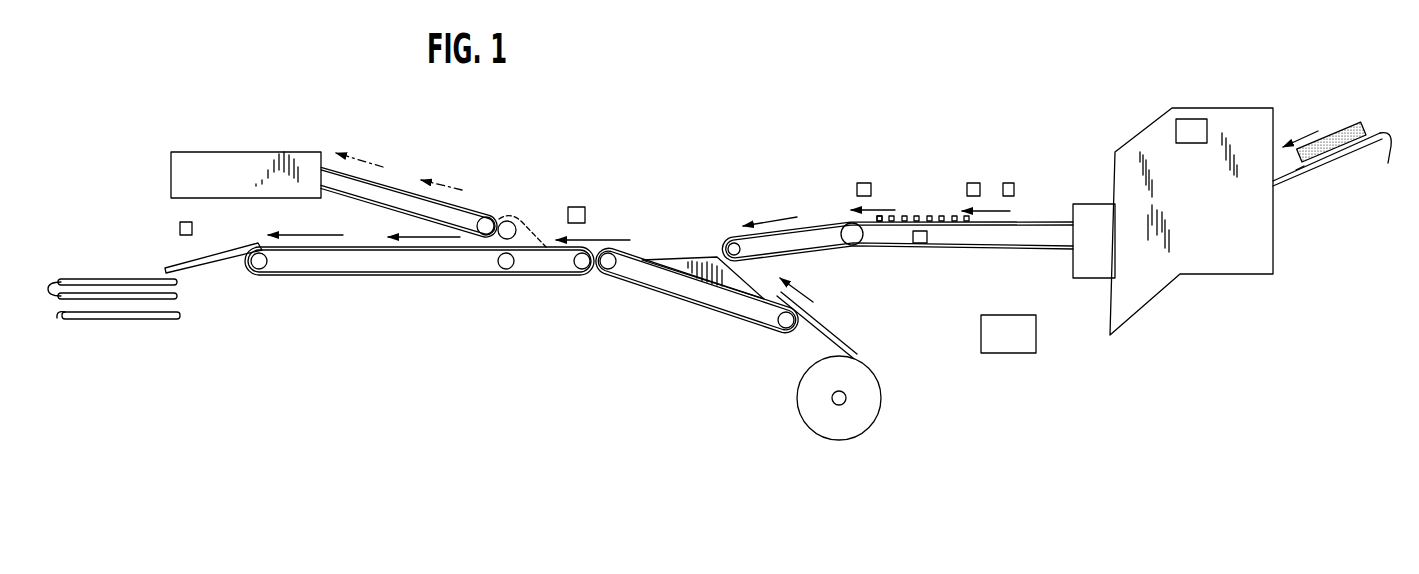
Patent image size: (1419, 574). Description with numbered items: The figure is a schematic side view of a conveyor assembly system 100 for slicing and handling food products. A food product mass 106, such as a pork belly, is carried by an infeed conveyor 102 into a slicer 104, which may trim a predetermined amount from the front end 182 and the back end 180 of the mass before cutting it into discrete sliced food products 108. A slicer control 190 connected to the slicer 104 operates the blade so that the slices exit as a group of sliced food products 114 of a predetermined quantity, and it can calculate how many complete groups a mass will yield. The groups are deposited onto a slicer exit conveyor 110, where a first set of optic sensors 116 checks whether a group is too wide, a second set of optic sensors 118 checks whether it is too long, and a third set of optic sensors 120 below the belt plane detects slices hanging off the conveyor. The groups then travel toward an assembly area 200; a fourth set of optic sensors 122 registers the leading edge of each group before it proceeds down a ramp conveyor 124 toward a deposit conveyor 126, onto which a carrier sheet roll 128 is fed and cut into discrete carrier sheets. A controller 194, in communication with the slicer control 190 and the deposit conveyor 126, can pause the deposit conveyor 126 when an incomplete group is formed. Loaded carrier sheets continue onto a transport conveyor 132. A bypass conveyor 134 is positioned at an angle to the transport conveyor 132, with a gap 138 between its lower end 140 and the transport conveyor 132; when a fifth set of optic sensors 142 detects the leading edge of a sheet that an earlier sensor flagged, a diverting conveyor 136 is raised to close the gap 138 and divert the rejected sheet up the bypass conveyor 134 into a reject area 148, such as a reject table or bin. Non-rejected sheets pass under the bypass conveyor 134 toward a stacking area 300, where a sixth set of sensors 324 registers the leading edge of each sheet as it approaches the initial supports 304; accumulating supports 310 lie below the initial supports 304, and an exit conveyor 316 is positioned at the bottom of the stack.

The conveyor assembly system 100 is at (936, 116).
The infeed conveyor 102 is at (1293, 168).
The slicer 104 is at (1212, 258).
The food product mass 106 is at (1348, 130).
The sliced food products 108 is at (884, 212).
The slicer exit conveyor 110 is at (1051, 218).
The group of sliced food products 114 is at (958, 211).
The first set of optic sensors 116 is at (1009, 182).
The second set of optic sensors 118 is at (974, 181).
The third set of optic sensors 120 is at (916, 245).
The fourth set of optic sensors 122 is at (862, 182).
The ramp conveyor 124 is at (810, 223).
The deposit conveyor 126 is at (670, 250).
The carrier sheet roll 128 is at (880, 432).
The transport conveyor 132 is at (553, 245).
The bypass conveyor 134 is at (393, 185).
The diverting conveyor 136 is at (540, 240).
The gap 138 is at (483, 244).
The lower end of bypass conveyor 140 is at (496, 220).
The fifth set of optic sensors 142 is at (588, 212).
The reject area 148 is at (248, 158).
The back end of food product mass 180 is at (1388, 140).
The front end of food product mass 182 is at (1300, 166).
The slicer control 190 is at (1195, 118).
The controller 194 is at (1012, 355).
The assembly area 200 is at (720, 208).
The stacking area 300 is at (133, 243).
The initial supports 304 is at (112, 283).
The accumulating supports 310 is at (55, 283).
The exit conveyor 316 is at (57, 317).
The sixth set of sensors 324 is at (193, 228).